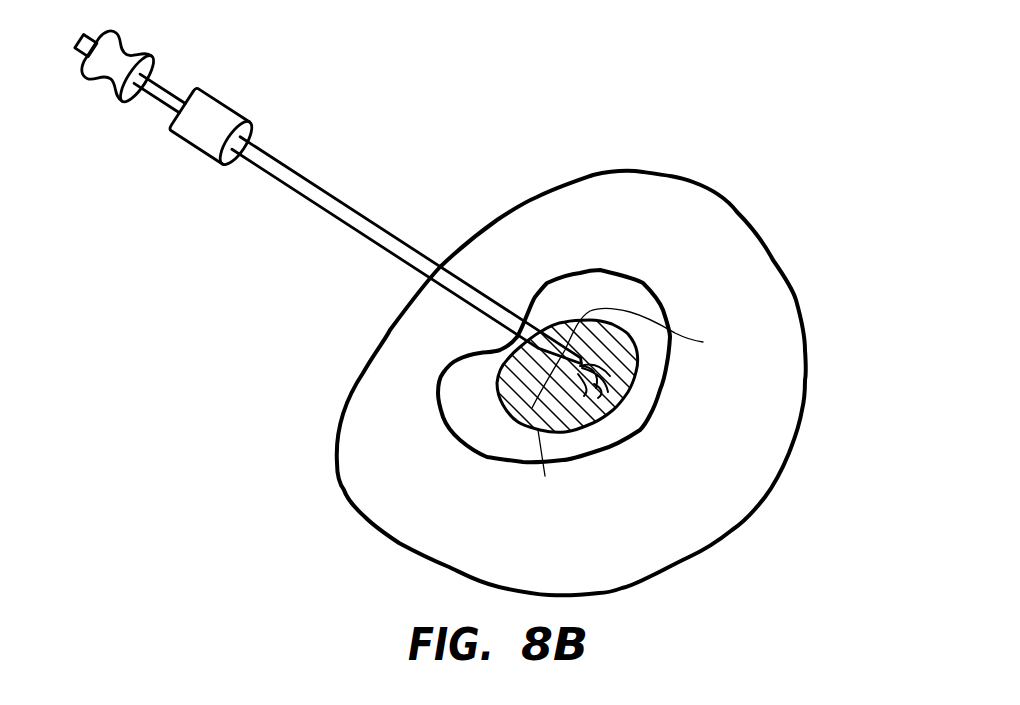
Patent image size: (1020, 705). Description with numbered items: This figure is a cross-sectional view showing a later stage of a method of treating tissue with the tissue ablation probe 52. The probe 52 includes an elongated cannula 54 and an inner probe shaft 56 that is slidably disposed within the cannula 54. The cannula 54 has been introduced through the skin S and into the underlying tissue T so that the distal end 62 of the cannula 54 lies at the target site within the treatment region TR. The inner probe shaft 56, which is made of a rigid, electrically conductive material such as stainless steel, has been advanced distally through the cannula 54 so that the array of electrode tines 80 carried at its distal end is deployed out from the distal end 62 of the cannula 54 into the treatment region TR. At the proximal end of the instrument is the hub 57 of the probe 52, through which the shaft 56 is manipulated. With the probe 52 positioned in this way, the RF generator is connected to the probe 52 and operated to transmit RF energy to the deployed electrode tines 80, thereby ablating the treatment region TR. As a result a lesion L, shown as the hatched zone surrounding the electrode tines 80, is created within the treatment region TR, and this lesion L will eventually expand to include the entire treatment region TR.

The tissue ablation probe 52 is at (130, 74).
The cannula 54 is at (408, 255).
The inner probe shaft 56 is at (537, 469).
The probe hub 57 is at (213, 128).
The distal end of the cannula 62 is at (636, 358).
The electrode tines 80 is at (627, 388).
The skin S is at (537, 197).
The tissue T is at (718, 228).
The treatment region TR is at (603, 268).
The lesion L is at (645, 388).